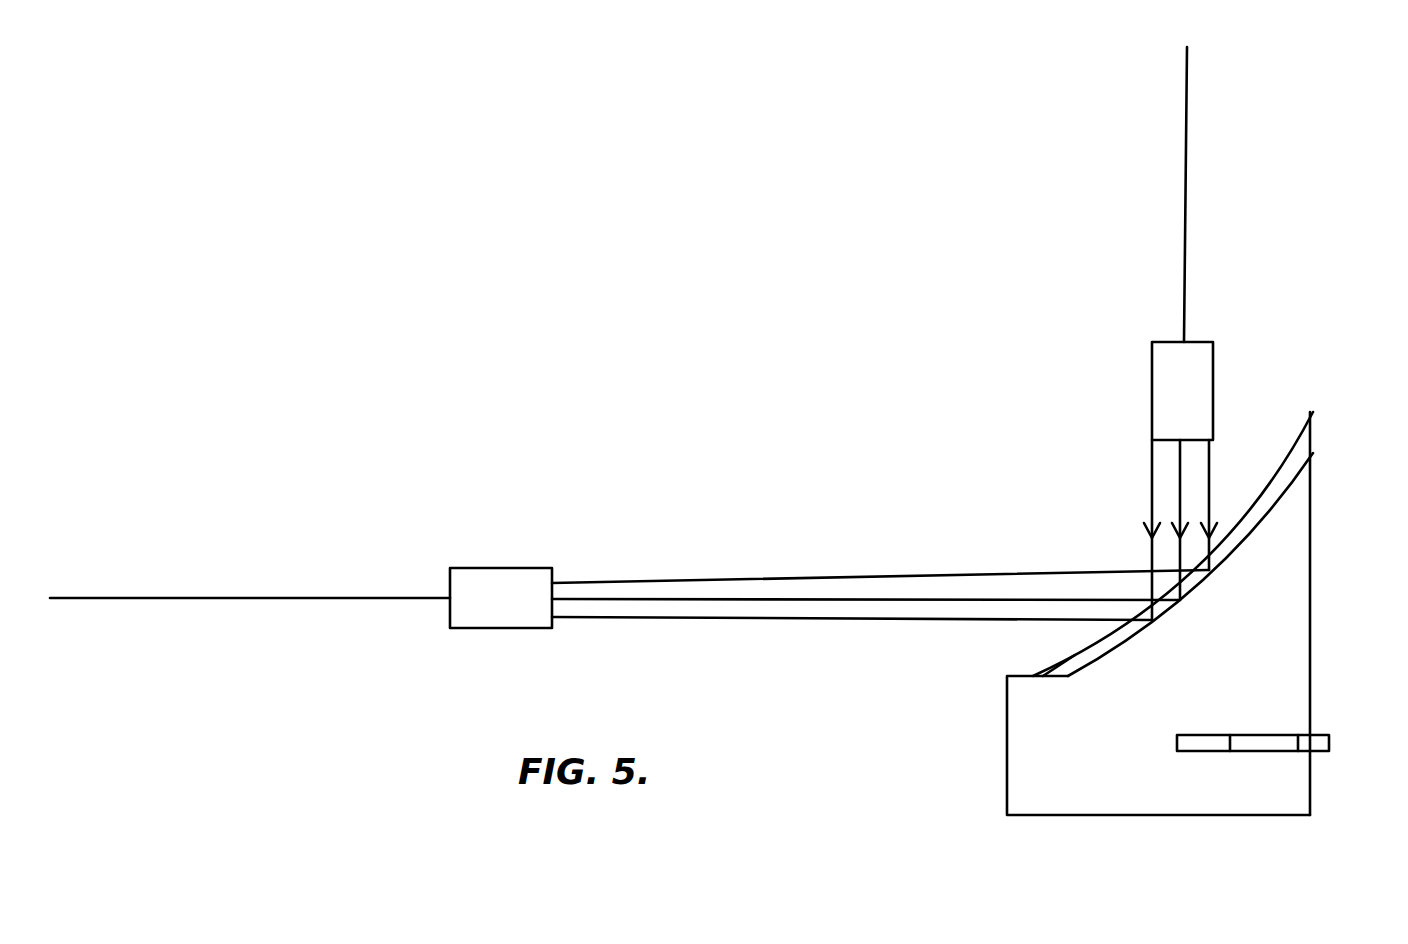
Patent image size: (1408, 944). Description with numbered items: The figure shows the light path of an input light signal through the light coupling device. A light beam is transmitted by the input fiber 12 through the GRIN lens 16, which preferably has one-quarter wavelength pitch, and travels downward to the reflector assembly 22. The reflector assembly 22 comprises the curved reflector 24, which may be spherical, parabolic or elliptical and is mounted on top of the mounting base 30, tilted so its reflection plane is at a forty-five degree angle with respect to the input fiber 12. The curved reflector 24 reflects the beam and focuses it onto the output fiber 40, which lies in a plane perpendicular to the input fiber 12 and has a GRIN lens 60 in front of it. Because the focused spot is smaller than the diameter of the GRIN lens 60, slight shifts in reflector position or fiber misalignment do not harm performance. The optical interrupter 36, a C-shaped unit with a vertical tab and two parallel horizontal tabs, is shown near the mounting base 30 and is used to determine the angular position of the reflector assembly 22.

The input fiber 12 is at (1187, 100).
The GRIN lens 16 is at (1213, 365).
The reflector assembly 22 is at (1332, 579).
The curved reflector 24 is at (1273, 482).
The mounting base 30 is at (1058, 802).
The optical interrupter 36 is at (1320, 753).
The output fiber 40 is at (230, 597).
The GRIN lens 60 is at (492, 568).